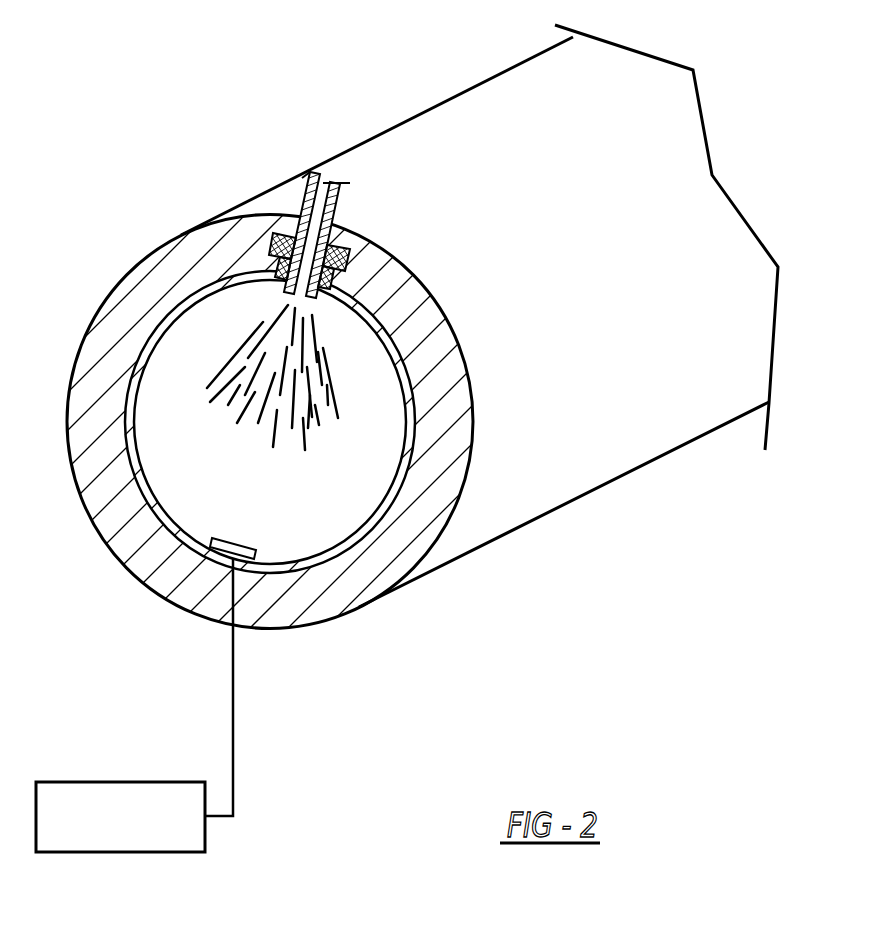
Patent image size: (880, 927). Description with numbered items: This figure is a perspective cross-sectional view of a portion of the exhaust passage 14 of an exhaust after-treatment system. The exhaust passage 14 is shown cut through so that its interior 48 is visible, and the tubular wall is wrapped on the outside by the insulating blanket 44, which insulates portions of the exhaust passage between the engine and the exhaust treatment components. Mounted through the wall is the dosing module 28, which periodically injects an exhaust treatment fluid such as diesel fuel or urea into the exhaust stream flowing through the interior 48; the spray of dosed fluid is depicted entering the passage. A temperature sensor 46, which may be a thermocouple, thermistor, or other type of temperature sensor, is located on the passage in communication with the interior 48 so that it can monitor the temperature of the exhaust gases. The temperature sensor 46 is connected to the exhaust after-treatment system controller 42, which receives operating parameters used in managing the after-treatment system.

The exhaust passage 14 is at (357, 543).
The dosing module 28 is at (352, 270).
The exhaust after-treatment system controller 42 is at (167, 782).
The insulating blanket 44 is at (438, 445).
The temperature sensor 46 is at (240, 541).
The interior of exhaust passage 48 is at (181, 518).